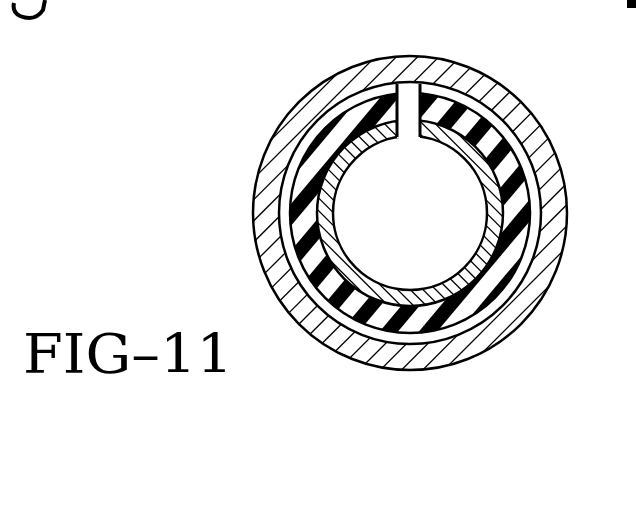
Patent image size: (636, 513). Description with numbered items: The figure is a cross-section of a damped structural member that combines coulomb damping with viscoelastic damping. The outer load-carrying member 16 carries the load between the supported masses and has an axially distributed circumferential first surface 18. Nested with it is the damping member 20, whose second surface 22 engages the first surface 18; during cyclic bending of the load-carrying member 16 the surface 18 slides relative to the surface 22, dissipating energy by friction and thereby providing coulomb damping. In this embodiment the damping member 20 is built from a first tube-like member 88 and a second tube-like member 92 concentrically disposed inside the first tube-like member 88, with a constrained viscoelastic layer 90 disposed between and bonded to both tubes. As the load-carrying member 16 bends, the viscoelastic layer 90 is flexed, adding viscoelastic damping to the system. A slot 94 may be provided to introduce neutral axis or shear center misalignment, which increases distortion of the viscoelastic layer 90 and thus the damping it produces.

The load-carrying member 16 is at (300, 113).
The first surface 18 is at (492, 133).
The damping member 20 is at (450, 236).
The second surface 22 is at (530, 157).
The first tube-like member 88 is at (297, 162).
The constrained viscoelastic layer 90 is at (303, 217).
The second tube-like member 92 is at (467, 273).
The slot 94 is at (420, 112).